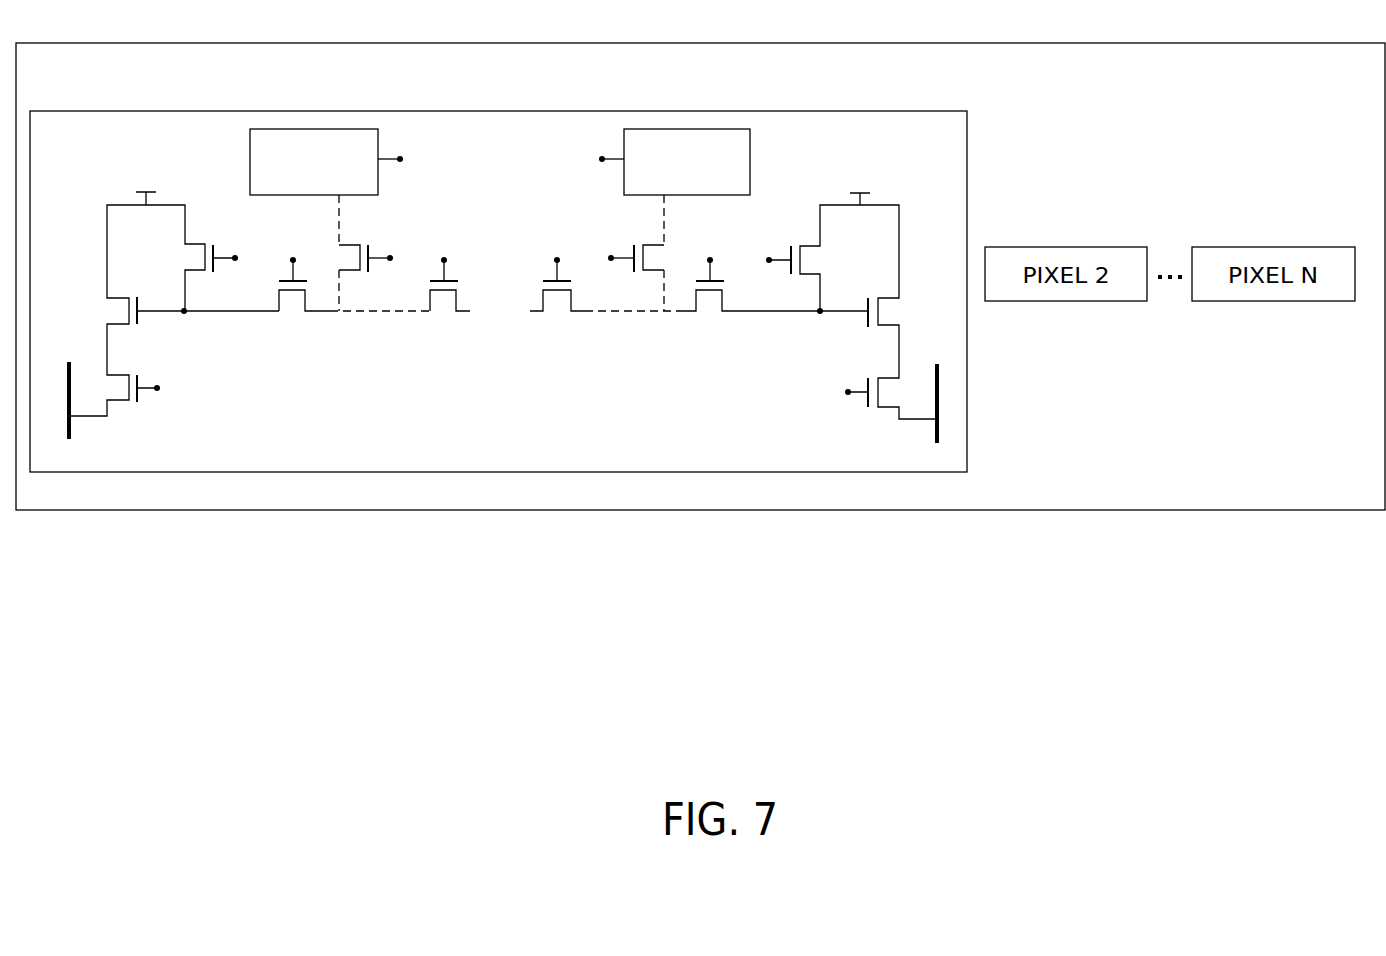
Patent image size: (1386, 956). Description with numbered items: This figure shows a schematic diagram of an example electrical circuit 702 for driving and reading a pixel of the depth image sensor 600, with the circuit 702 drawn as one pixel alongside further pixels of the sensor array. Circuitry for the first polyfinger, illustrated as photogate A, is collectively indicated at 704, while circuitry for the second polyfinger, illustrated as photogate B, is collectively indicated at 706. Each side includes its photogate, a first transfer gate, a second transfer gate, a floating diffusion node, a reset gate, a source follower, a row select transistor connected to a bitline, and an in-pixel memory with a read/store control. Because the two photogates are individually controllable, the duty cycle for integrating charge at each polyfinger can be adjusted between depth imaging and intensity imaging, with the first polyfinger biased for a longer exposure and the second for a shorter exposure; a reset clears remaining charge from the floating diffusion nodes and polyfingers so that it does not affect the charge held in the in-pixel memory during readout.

The depth image sensor 600 is at (263, 95).
The electrical circuit 702 is at (88, 150).
The circuitry for the first polyfinger 704 is at (320, 105).
The circuitry for the second polyfinger 706 is at (694, 105).